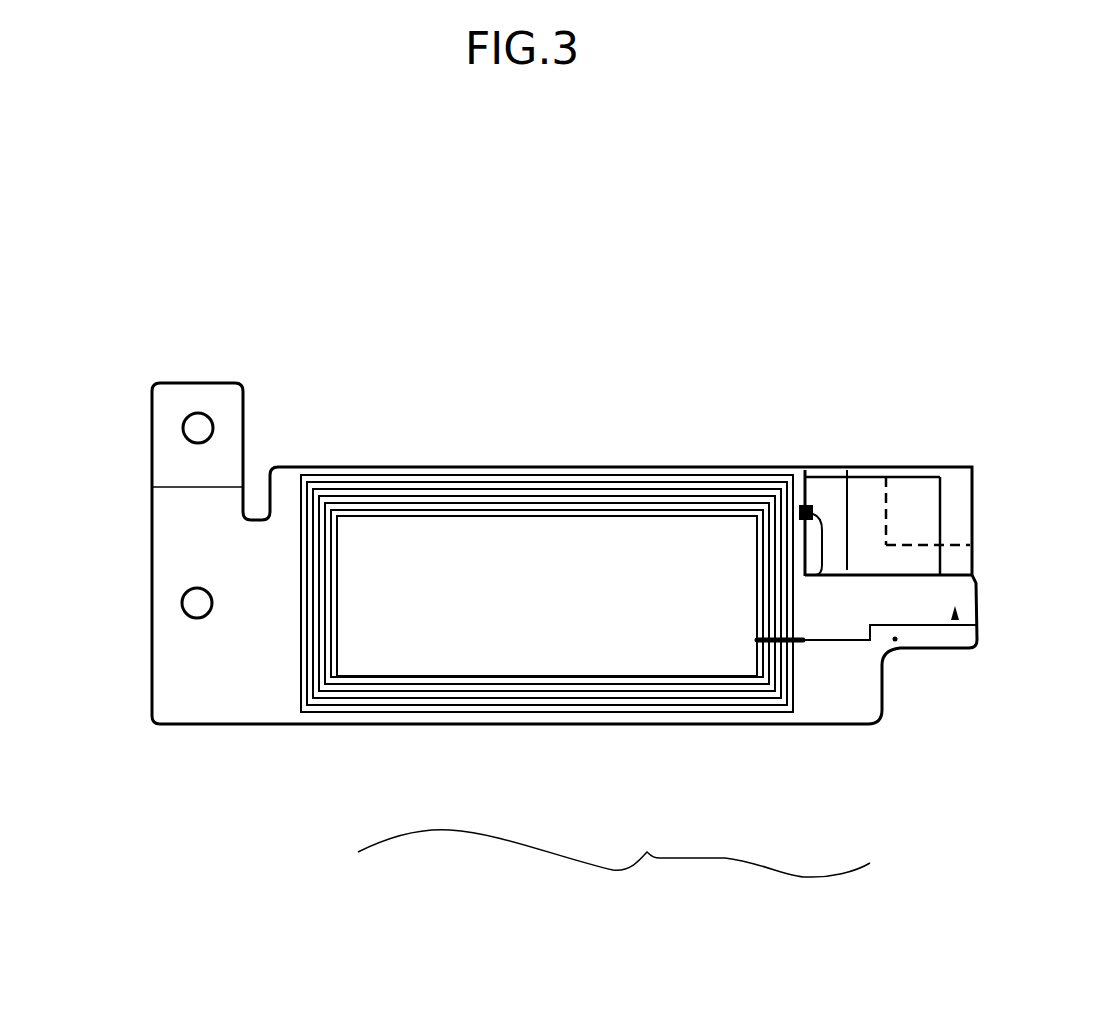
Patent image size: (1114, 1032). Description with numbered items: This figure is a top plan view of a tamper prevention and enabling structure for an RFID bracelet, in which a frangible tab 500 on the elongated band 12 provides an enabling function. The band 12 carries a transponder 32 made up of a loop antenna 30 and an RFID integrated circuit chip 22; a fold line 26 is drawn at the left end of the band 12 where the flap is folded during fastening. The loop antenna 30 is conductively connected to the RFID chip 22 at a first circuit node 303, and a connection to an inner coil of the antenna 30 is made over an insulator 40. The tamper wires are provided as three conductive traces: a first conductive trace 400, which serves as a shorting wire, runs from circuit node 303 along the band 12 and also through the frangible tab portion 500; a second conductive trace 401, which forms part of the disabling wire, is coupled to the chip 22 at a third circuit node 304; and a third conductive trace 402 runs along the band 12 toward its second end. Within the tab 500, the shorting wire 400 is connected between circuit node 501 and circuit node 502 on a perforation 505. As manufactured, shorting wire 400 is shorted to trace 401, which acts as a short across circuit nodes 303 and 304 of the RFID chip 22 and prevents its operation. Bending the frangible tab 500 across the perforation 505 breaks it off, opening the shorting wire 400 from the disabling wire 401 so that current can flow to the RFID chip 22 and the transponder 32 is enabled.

The elongated band 12 is at (955, 618).
The RFID integrated circuit chip 22 is at (778, 482).
The fold line 26 is at (152, 485).
The antenna 30 is at (507, 467).
The transponder 32 is at (614, 876).
The insulator 40 is at (757, 637).
The first circuit node 303 is at (810, 505).
The third circuit node 304 is at (817, 576).
The first conductive trace 400 is at (923, 467).
The second conductive trace 401 is at (847, 470).
The third conductive trace 402 is at (895, 640).
The frangible tab 500 is at (954, 467).
The circuit node 501 is at (886, 467).
The circuit node 502 is at (943, 545).
The perforation 505 is at (955, 543).